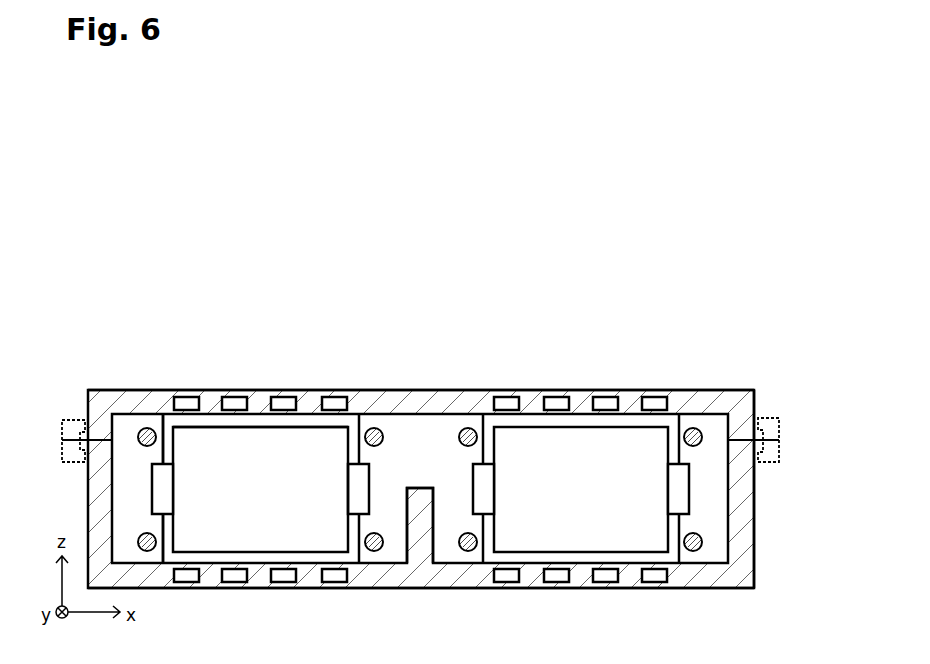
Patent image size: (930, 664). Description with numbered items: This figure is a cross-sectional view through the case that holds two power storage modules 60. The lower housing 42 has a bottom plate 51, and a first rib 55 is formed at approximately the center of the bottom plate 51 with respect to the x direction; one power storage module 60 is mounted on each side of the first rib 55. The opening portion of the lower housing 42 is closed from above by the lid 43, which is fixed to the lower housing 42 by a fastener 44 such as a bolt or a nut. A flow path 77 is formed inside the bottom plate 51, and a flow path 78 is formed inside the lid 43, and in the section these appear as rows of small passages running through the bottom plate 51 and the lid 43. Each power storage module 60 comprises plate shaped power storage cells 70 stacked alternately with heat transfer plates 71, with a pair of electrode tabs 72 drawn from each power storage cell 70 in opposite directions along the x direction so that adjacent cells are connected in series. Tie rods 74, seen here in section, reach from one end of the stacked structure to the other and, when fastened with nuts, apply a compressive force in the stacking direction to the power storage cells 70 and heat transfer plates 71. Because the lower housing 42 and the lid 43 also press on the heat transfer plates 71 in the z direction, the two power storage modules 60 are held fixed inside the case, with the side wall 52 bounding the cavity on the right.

The lower housing 42 is at (774, 548).
The lid 43 is at (718, 390).
The fastener 44 is at (763, 418).
The bottom plate 51 is at (680, 588).
The side wall 52 is at (753, 513).
The first rib 55 is at (420, 492).
The power storage module 60 is at (420, 420).
The power storage cell 70 is at (225, 440).
The heat transfer plate 71 is at (199, 422).
The electrode tab 72 is at (162, 477).
The tie rod 74 is at (146, 429).
The flow path 77 is at (507, 581).
The flow path 78 is at (507, 397).